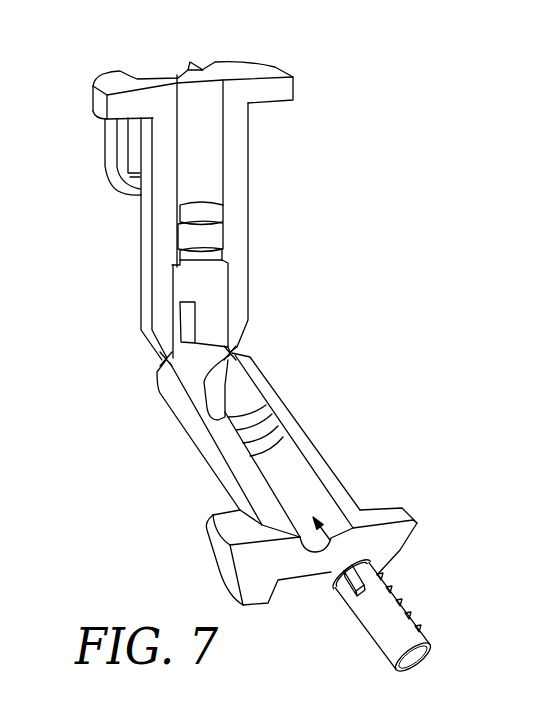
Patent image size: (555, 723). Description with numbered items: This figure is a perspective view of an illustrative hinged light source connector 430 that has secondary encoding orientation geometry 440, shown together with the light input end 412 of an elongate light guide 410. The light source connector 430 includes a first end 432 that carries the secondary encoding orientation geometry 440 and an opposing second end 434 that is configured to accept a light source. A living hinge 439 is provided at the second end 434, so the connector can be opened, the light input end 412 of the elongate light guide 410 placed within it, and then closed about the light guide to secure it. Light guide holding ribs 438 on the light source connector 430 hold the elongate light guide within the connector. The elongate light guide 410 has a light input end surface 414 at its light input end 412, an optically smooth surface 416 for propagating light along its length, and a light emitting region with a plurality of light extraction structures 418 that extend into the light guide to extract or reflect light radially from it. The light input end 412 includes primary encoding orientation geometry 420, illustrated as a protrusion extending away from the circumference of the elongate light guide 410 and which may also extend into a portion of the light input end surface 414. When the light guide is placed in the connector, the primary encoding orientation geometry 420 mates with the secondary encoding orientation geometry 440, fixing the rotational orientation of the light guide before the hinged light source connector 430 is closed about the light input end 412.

The light source connector 430 is at (226, 304).
The first end 432 is at (235, 68).
The second end 434 is at (253, 362).
The light guide holding ribs 438 is at (282, 421).
The living hinge 439 is at (160, 360).
The secondary encoding orientation geometry 440 is at (181, 313).
The light input end surface 414 is at (350, 550).
The light input end 412 is at (375, 570).
The elongate light guide 410 is at (385, 597).
The light extraction structures 418 is at (420, 633).
The primary encoding orientation geometry 420 is at (332, 583).
The optically smooth surface 416 is at (387, 640).